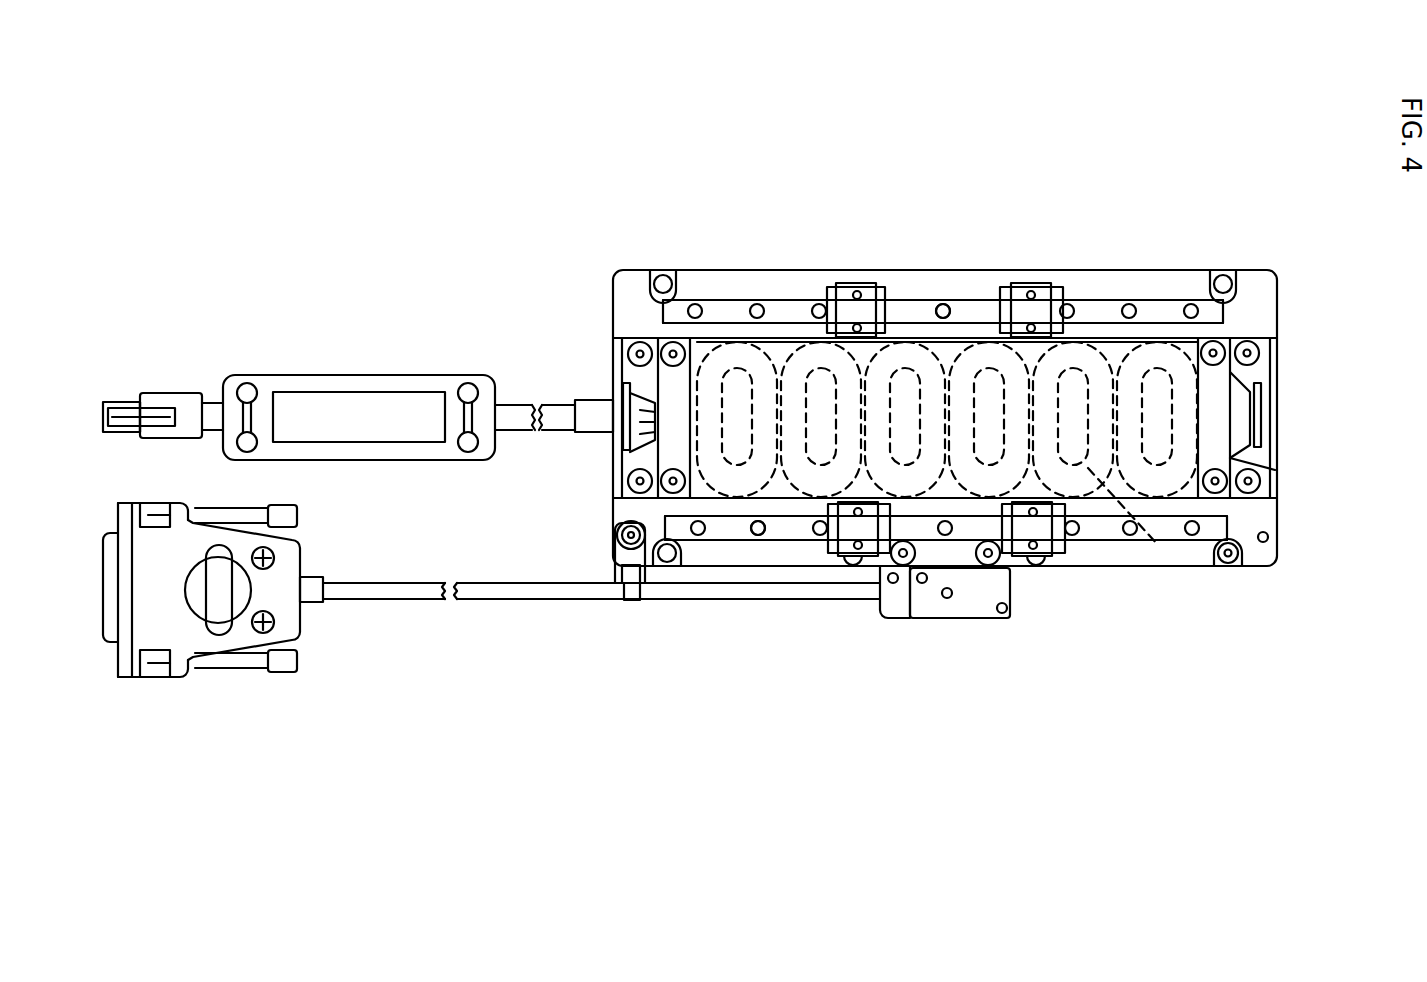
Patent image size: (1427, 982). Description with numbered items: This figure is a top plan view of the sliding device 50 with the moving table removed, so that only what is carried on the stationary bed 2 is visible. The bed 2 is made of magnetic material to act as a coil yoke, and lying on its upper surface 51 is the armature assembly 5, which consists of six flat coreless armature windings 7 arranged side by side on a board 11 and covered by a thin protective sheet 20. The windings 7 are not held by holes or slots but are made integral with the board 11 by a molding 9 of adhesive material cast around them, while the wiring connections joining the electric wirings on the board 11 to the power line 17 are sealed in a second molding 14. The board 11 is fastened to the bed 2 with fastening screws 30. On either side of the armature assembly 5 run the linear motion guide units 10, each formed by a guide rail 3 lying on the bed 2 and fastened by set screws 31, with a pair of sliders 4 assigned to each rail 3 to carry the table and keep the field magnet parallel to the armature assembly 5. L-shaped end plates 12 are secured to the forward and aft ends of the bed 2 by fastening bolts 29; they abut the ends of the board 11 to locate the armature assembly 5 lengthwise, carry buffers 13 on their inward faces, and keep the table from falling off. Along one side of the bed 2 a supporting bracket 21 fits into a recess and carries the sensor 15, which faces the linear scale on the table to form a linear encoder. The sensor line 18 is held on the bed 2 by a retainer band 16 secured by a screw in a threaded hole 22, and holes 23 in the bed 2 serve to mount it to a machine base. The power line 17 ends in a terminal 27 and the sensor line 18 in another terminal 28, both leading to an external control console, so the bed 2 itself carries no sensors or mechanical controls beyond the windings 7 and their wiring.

The stationary bed 2 is at (1099, 552).
The guide rail 3 is at (1108, 305).
The slider 4 is at (862, 292).
The armature assembly 5 is at (1172, 339).
The armature winding 7 is at (812, 338).
The molding 9 is at (785, 338).
The linear motion guide unit 10 is at (1069, 300).
The board 11 is at (1222, 458).
The end plate 12 is at (617, 353).
The buffer 13 is at (1262, 418).
The second molding 14 is at (676, 393).
The sensor 15 is at (963, 602).
The retainer band 16 is at (632, 602).
The power line 17 is at (515, 400).
The sensor line 18 is at (492, 592).
The protective sheet 20 is at (937, 338).
The supporting bracket 21 is at (892, 606).
The threaded hole 22 is at (1267, 542).
The hole 23 is at (1229, 566).
The terminal 27 is at (170, 405).
The terminal 28 is at (185, 645).
The fastening bolt 29 is at (640, 350).
The fastening screw 30 is at (673, 350).
The set screw 31 is at (948, 302).
The sliding device 50 is at (1043, 237).
The upper surface 51 is at (738, 332).